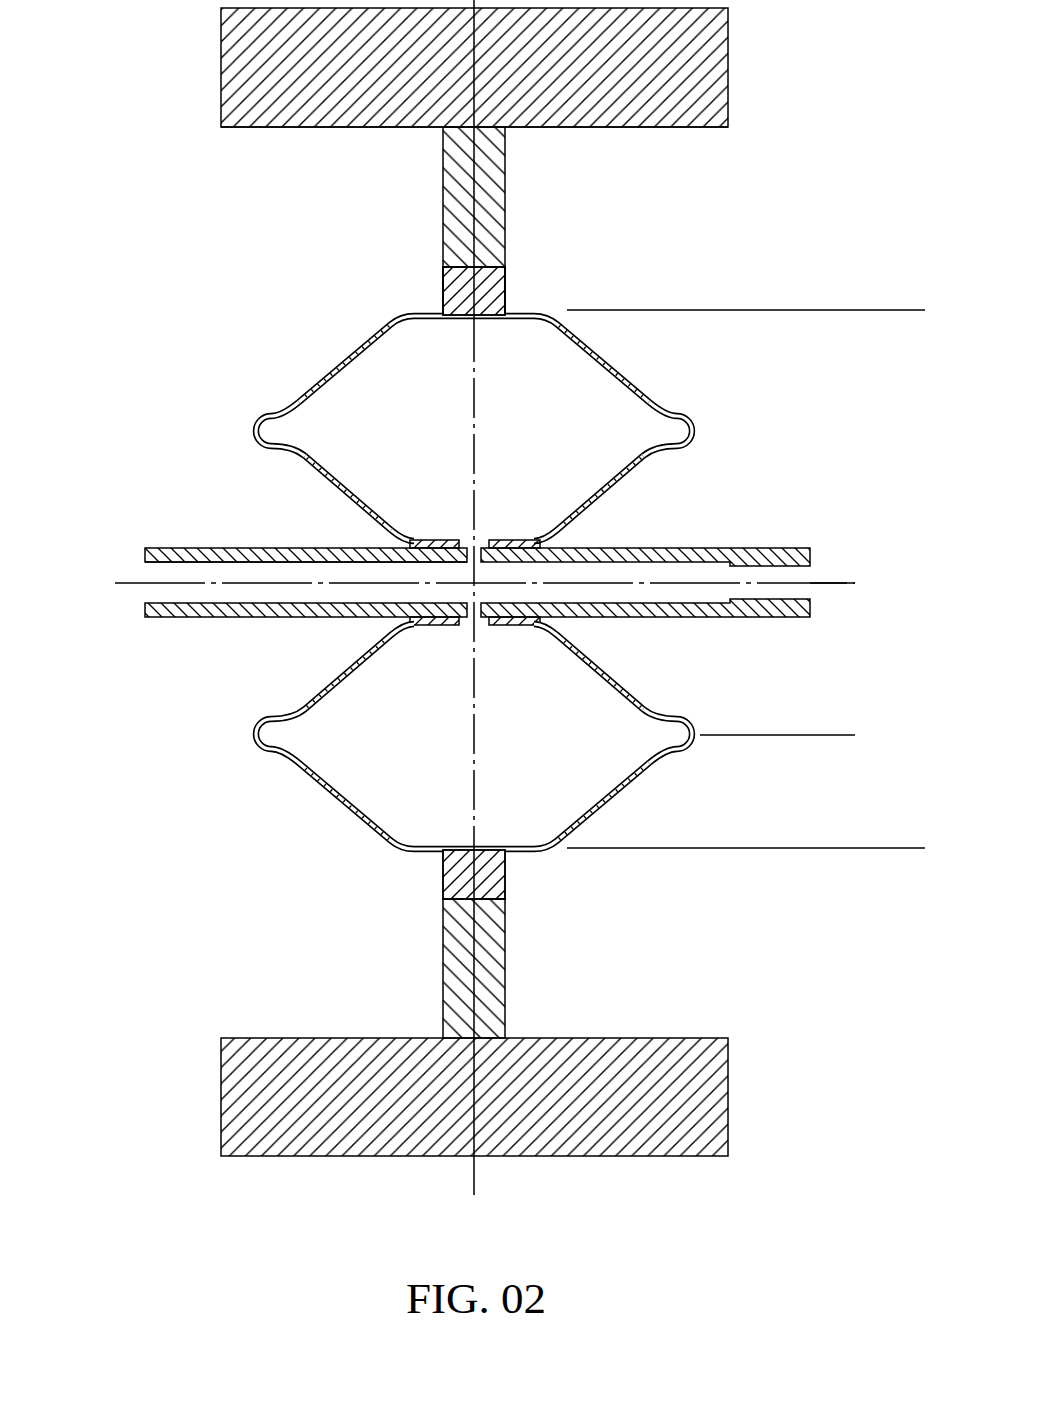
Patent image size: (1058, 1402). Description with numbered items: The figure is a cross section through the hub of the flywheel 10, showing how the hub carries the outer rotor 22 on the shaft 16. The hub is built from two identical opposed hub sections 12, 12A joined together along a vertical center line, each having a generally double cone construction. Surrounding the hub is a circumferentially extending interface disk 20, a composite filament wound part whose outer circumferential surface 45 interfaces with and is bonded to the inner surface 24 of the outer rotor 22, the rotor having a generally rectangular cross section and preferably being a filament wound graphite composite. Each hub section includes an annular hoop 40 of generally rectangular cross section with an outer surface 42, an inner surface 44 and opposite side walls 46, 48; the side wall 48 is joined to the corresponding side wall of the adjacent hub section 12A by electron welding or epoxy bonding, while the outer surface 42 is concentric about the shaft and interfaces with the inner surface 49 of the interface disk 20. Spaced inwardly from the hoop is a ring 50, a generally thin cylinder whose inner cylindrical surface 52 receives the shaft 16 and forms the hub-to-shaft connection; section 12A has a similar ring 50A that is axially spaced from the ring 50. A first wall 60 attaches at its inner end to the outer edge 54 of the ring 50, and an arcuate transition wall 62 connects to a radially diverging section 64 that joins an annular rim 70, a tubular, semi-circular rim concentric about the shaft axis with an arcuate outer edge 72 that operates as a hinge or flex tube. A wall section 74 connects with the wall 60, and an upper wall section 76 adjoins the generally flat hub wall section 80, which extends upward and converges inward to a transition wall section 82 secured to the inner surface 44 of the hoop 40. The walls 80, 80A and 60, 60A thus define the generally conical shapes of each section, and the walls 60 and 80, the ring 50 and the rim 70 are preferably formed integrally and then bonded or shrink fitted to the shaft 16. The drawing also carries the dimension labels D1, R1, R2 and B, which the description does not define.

The flywheel 10 is at (753, 227).
The hub section 12 is at (316, 377).
The hub section 12A is at (636, 374).
The shaft 16 is at (763, 546).
The interface disk 20 is at (509, 200).
The outer rotor 22 is at (734, 60).
The inner surface 24 is at (418, 128).
The annular hoop 40 is at (438, 275).
The outer surface 42 is at (506, 267).
The inner surface 44 is at (480, 322).
The outer circumferential surface 45 is at (439, 1035).
The side wall 46 is at (444, 293).
The side wall 48 is at (506, 294).
The inner surface 49 is at (483, 266).
The ring 50 is at (442, 533).
The ring 50A is at (500, 538).
The inner cylindrical surface 52 is at (430, 562).
The outer edge 54 is at (407, 546).
The first wall 60 is at (341, 471).
The wall 60A is at (628, 480).
The arcuate transition wall 62 is at (387, 537).
The radially diverging section 64 is at (334, 492).
The annular rim 70 is at (248, 442).
The arcuate outer edge 72 is at (254, 426).
The wall section 74 is at (278, 452).
The upper wall section 76 is at (278, 408).
The hub wall section 80 is at (346, 377).
The hub wall section 80A is at (515, 273).
The transition wall section 82 is at (412, 322).
The flange thickness dimension B is at (624, 794).
The overall height dimension D1 is at (893, 313).
The bead radial position R1 is at (838, 585).
The bead radius R2 is at (693, 708).